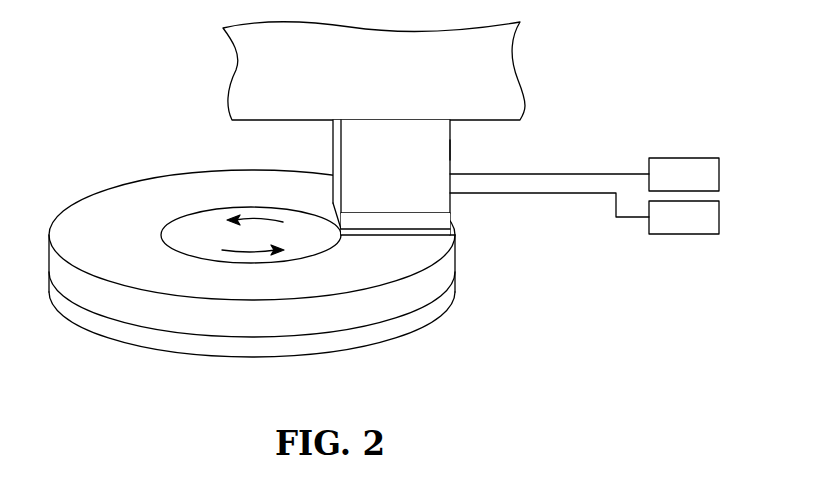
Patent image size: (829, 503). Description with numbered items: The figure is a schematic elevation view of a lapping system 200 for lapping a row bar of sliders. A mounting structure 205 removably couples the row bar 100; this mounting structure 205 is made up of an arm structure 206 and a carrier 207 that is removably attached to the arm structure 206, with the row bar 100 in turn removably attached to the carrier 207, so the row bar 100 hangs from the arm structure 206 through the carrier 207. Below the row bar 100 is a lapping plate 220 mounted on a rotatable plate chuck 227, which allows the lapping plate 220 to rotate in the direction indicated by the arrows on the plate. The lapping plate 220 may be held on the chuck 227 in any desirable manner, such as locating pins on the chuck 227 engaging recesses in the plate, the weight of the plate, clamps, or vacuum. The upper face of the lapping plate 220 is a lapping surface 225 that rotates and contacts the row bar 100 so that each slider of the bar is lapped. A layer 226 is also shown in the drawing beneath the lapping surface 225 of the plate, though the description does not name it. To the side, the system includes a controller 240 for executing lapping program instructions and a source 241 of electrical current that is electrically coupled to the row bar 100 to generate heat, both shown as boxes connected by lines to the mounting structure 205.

The row bar 100 is at (437, 222).
The lapping system 200 is at (586, 46).
The mounting structure 205 is at (518, 143).
The arm structure 206 is at (387, 77).
The carrier 207 is at (409, 170).
The lapping plate 220 is at (280, 281).
The lapping surface 225 is at (150, 273).
The substrate layer of disk 226 is at (280, 333).
The rotatable plate chuck 227 is at (245, 356).
The controller 240 is at (700, 186).
The source of electrical current 241 is at (700, 229).